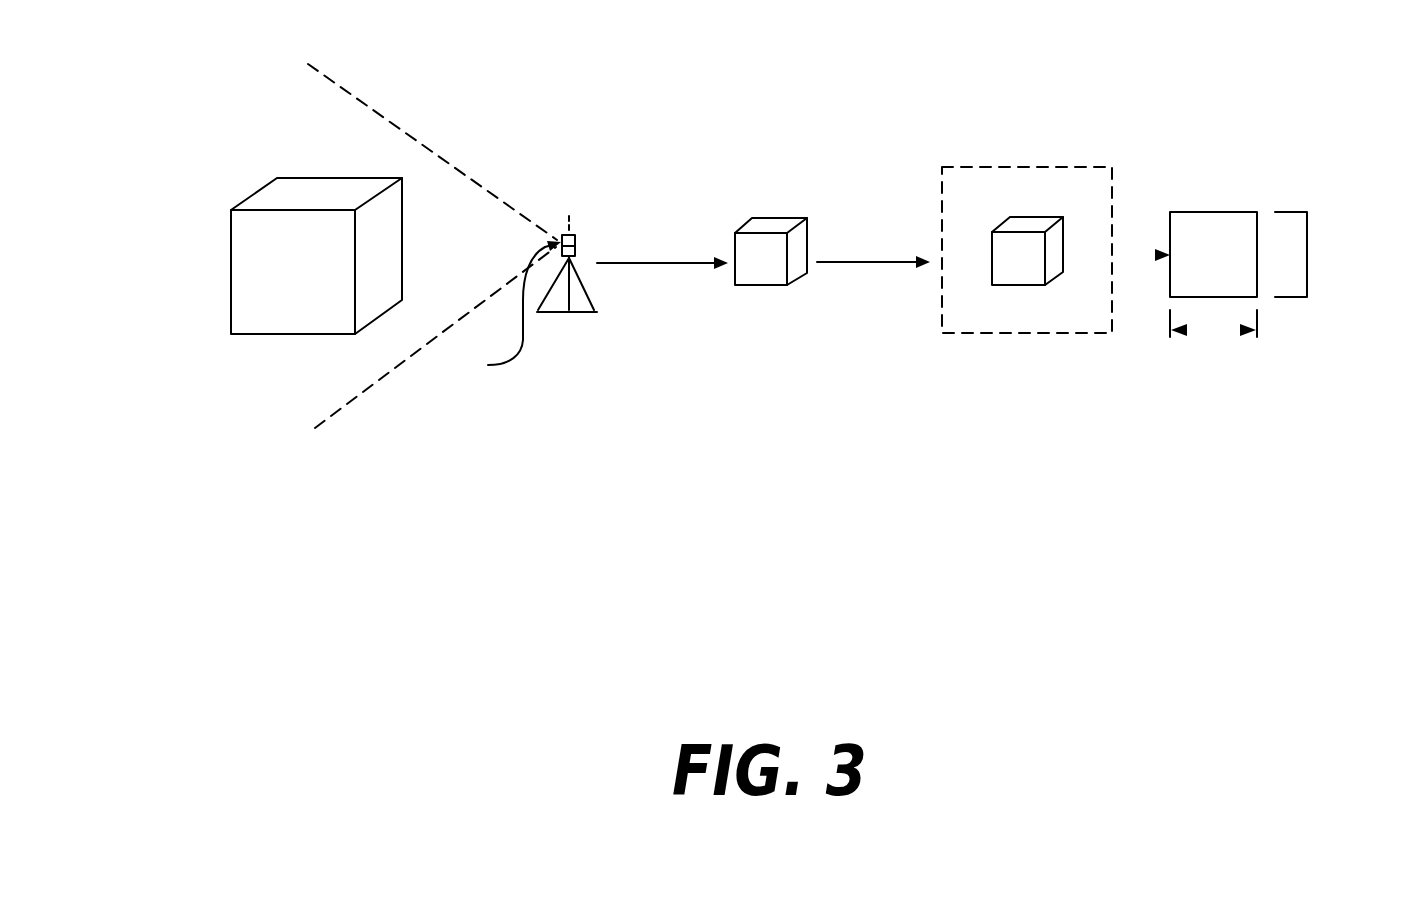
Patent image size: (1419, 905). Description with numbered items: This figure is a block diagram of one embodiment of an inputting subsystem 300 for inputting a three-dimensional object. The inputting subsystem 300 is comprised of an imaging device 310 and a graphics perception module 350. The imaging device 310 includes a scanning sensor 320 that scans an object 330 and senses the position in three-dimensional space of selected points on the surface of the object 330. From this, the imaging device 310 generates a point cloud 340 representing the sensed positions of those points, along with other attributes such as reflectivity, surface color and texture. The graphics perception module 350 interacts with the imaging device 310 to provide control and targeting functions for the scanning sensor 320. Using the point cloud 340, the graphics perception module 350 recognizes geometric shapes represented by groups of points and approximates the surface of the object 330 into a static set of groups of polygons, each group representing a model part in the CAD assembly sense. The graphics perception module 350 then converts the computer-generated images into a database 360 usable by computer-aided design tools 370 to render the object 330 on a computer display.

The inputting subsystem 300 is at (1415, 704).
The imaging device 310 is at (573, 235).
The scanning sensor 320 is at (496, 314).
The object 330 is at (345, 178).
The point cloud 340 is at (753, 218).
The graphics perception module 350 is at (963, 167).
The database 360 is at (1058, 217).
The computer-aided design tools 370 is at (1220, 212).